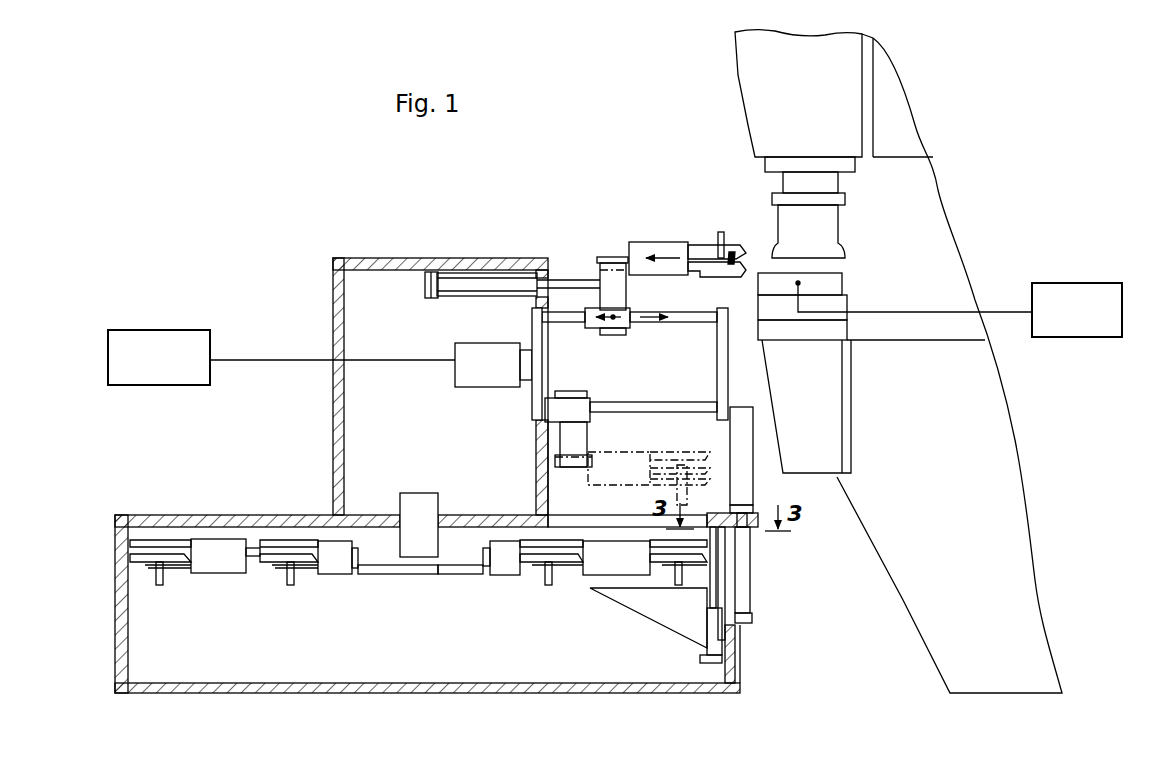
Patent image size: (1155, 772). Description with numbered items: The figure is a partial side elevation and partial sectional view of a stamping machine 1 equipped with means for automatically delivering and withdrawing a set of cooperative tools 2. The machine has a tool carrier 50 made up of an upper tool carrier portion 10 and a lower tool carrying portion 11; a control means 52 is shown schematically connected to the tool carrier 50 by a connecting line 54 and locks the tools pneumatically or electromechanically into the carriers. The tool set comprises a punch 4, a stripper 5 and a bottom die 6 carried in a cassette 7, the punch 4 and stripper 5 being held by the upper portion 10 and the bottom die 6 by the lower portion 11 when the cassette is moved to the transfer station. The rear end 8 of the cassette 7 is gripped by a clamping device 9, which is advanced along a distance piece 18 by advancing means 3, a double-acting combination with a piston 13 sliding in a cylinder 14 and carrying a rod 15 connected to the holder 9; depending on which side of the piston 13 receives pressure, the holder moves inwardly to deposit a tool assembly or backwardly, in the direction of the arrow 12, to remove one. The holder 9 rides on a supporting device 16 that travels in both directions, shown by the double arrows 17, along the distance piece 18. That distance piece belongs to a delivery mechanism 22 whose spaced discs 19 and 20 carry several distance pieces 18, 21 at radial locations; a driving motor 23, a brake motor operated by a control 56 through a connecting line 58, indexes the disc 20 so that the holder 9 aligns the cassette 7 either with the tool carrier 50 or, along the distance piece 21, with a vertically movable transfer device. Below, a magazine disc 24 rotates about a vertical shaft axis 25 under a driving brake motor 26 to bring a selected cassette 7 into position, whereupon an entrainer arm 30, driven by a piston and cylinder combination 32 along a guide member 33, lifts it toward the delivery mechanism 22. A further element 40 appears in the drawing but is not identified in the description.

The stamping machine 1 is at (742, 103).
The cooperative tools 2 is at (734, 252).
The advancing means 3 is at (484, 258).
The punch 4 is at (718, 232).
The stripper 5 is at (766, 257).
The bottom die 6 is at (730, 277).
The cassette 7 is at (657, 243).
The rear end 8 is at (614, 257).
The clamping device 9 is at (613, 301).
The upper tool carrier portion 10 is at (840, 218).
The lower tool carrying portion 11 is at (833, 283).
The arrow 12 is at (668, 266).
The piston 13 is at (437, 298).
The cylinder 14 is at (490, 297).
The rod 15 is at (572, 280).
The supporting device 16 is at (587, 325).
The double arrows 17 is at (612, 328).
The distance piece 18 is at (681, 322).
The disc 19 is at (729, 388).
The disc 20 is at (540, 395).
The distance piece 21 is at (654, 412).
The delivery mechanism 22 is at (697, 395).
The driving motor 23 is at (466, 368).
The magazine disc 24 is at (472, 575).
The vertical shaft axis 25 is at (441, 566).
The driving brake motor 26 is at (430, 502).
The entrainer arm 30 is at (660, 613).
The piston and cylinder combination 32 is at (746, 566).
The guide member 33 is at (740, 584).
The drive shaft 40 is at (372, 576).
The tool carrier 50 is at (862, 263).
The control means 52 is at (1088, 285).
The connecting line 54 is at (993, 312).
The control 56 is at (136, 330).
The connecting line 58 is at (287, 360).